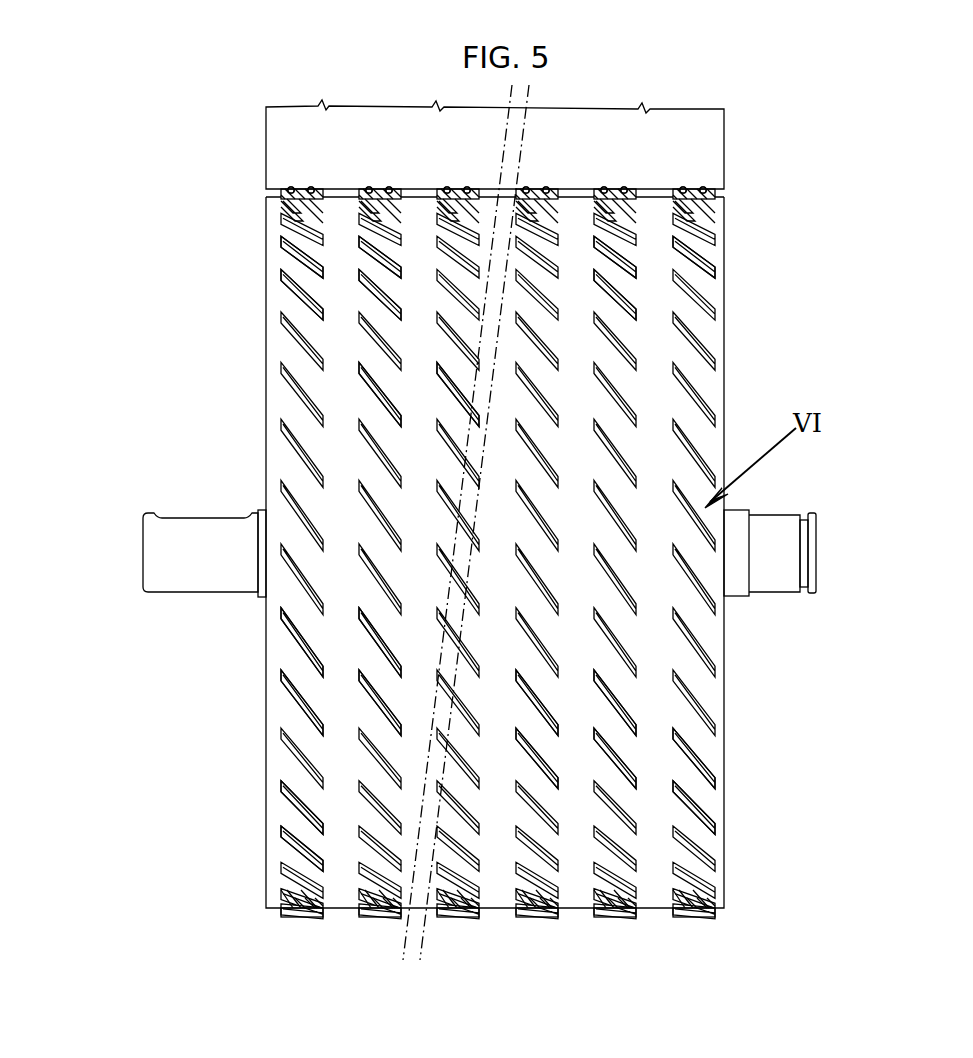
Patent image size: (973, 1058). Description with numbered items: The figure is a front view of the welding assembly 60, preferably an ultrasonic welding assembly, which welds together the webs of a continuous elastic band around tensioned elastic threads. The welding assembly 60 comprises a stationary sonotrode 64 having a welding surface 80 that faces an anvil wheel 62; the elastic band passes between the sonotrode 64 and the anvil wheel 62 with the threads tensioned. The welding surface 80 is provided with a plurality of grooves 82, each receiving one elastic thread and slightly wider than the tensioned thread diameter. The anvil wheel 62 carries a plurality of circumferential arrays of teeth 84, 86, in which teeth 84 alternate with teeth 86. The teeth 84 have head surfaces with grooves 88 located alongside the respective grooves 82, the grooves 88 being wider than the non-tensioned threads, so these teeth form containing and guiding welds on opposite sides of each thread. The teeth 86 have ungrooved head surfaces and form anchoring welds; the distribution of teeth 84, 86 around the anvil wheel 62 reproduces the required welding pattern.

The welding assembly 60 is at (866, 181).
The anvil wheel 62 is at (740, 318).
The sonotrode 64 is at (733, 122).
The welding surface 80 is at (412, 188).
The grooves 82 is at (391, 187).
The teeth 84 is at (303, 460).
The teeth 86 is at (360, 720).
The grooves 88 is at (385, 285).